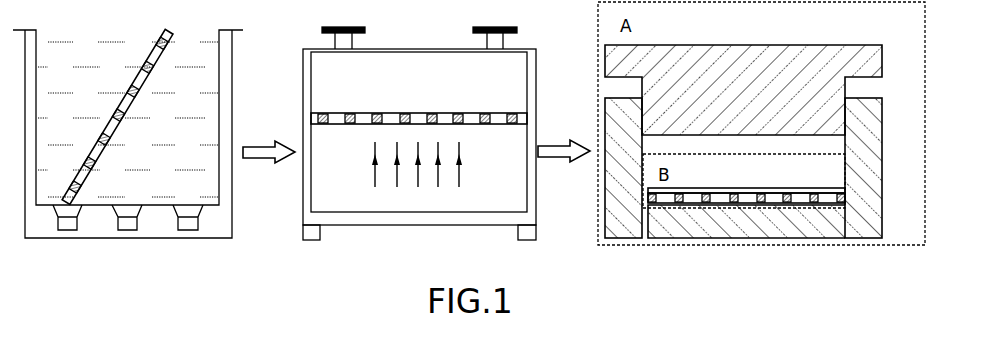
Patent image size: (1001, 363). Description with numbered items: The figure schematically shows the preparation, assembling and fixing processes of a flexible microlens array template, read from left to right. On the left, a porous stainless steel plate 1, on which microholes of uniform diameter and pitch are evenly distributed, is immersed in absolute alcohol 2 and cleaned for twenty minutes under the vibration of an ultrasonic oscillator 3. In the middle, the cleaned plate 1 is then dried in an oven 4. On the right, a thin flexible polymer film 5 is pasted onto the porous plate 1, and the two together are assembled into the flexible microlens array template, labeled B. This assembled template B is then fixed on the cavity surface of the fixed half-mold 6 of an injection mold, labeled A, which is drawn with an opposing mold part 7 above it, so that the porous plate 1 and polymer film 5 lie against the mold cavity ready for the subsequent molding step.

The porous stainless steel plate 1 is at (150, 63).
The absolute alcohol 2 is at (185, 130).
The ultrasonic oscillator 3 is at (227, 185).
The oven 4 is at (530, 192).
The flexible polymer film 5 is at (845, 188).
The fixed half-mold 6 is at (862, 230).
The upper mold plate 7 is at (860, 62).